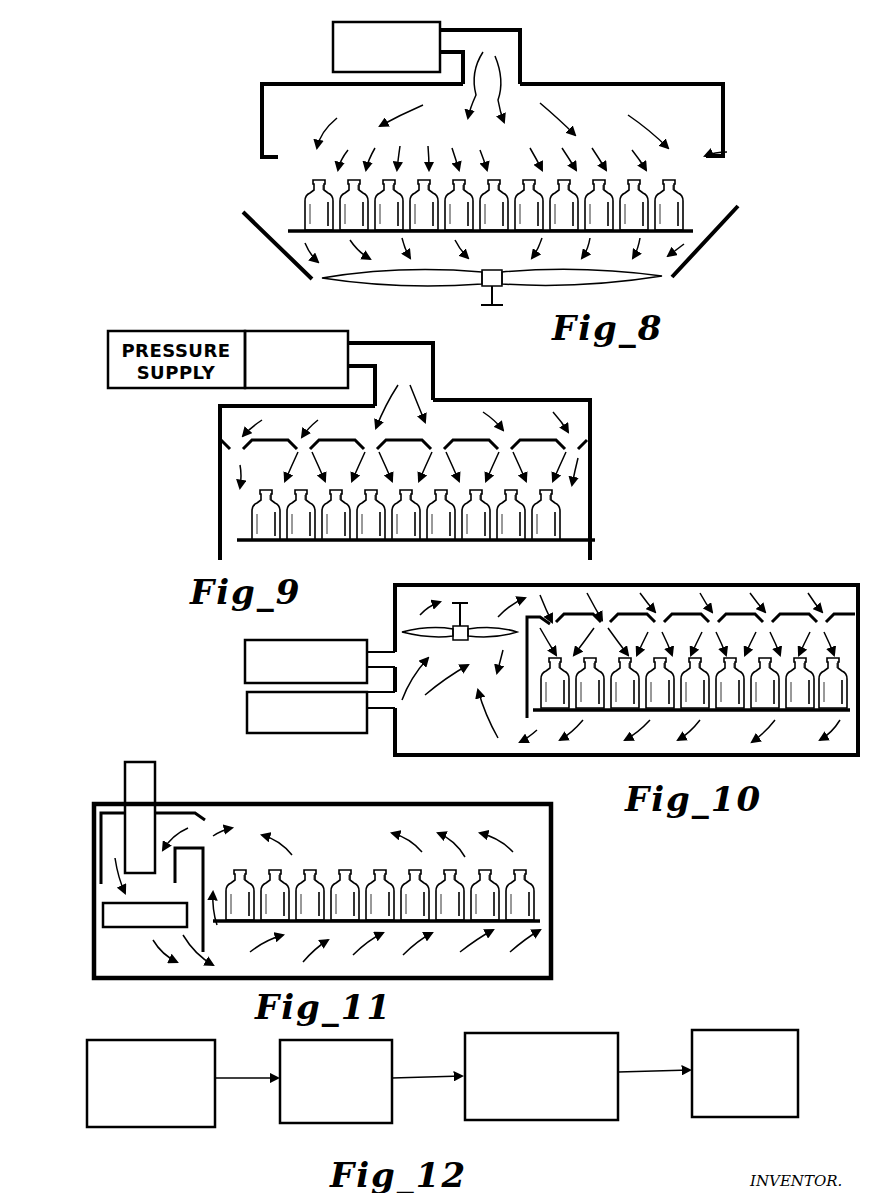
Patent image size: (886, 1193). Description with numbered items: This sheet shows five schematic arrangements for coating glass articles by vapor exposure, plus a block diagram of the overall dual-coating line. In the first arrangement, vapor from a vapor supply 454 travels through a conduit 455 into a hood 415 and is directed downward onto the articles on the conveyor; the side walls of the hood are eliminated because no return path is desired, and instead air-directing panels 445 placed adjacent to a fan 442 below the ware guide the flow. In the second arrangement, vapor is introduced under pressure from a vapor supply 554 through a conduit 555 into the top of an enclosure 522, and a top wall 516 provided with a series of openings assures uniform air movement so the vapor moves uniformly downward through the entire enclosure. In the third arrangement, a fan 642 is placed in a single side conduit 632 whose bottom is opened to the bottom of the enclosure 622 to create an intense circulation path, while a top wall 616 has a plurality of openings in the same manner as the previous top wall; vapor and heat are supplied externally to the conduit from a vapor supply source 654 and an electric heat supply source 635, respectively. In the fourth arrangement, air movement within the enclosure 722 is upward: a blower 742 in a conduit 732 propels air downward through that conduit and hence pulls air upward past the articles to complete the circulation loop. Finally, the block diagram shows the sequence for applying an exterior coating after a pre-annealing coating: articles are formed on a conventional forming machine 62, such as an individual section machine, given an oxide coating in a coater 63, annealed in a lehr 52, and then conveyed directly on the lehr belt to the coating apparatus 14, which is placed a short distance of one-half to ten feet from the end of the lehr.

In FIG. 8, the vapor supply 454 is at (333, 38).
In FIG. 8, the conduit 455 is at (506, 57).
In FIG. 8, the hood 415 is at (262, 125).
In FIG. 8, the air-directing panels 445 is at (272, 250).
In FIG. 8, the fan 442 is at (482, 296).
In FIG. 9, the vapor supply 554 is at (282, 331).
In FIG. 9, the conduit 555 is at (418, 384).
In FIG. 9, the top wall 516 is at (268, 443).
In FIG. 9, the enclosure 522 is at (570, 488).
In FIG. 10, the fan 642 is at (465, 610).
In FIG. 10, the top wall 616 is at (668, 612).
In FIG. 10, the enclosure 622 is at (772, 628).
In FIG. 10, the electric heat supply source 635 is at (245, 656).
In FIG. 10, the vapor supply source 654 is at (247, 704).
In FIG. 10, the side conduit 632 is at (402, 735).
In FIG. 11, the blower 742 is at (125, 775).
In FIG. 11, the conduit 732 is at (115, 893).
In FIG. 11, the enclosure 722 is at (379, 850).
In FIG. 12, the forming machine 62 is at (100, 1128).
In FIG. 12, the coater 63 is at (300, 1124).
In FIG. 12, the lehr 52 is at (575, 1033).
In FIG. 12, the coating apparatus 14 is at (772, 1030).